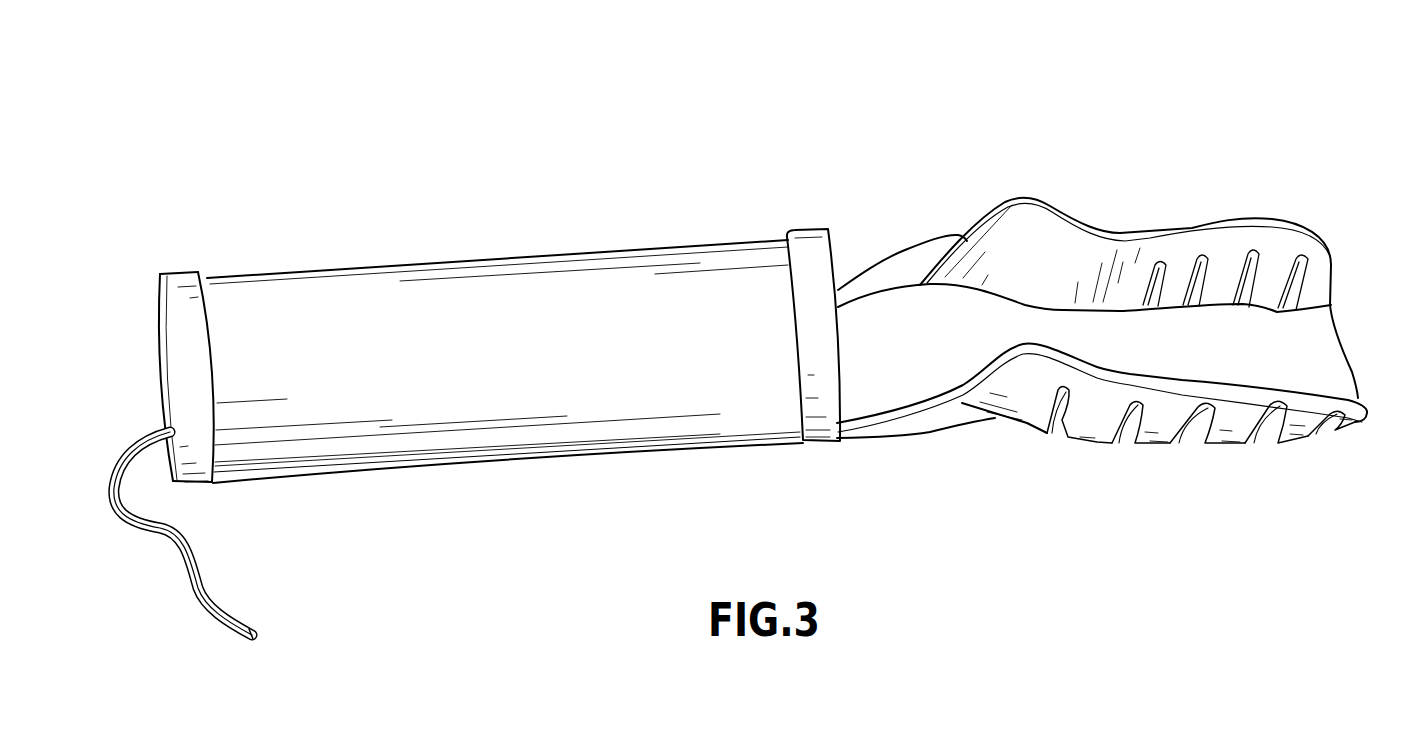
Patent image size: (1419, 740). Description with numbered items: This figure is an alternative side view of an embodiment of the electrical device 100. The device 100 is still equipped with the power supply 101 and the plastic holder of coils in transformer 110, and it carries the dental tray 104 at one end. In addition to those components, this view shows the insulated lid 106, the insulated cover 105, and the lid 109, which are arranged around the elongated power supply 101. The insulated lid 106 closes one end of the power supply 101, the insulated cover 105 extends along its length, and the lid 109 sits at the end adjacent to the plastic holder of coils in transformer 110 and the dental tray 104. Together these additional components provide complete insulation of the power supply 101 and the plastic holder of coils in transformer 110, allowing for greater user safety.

The electrical device 100 is at (1203, 71).
The power supply 101 is at (270, 248).
The dental tray 104 is at (1273, 203).
The insulated cover 105 is at (483, 247).
The insulated lid 106 is at (153, 383).
The lid 109 is at (793, 220).
The plastic holder of coils in transformer 110 is at (1360, 342).